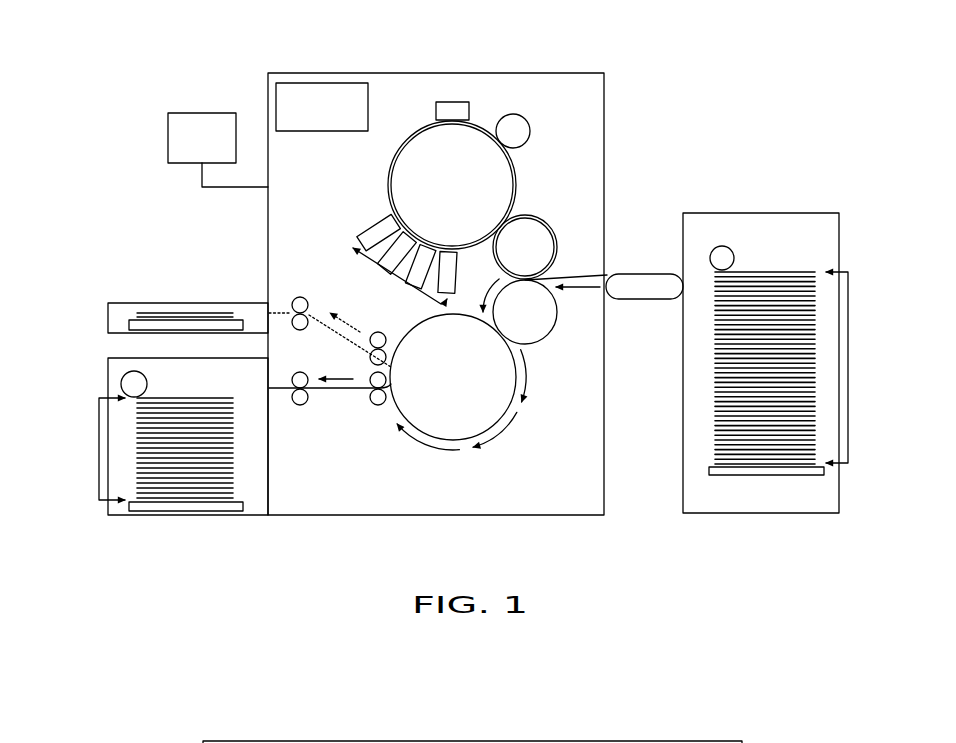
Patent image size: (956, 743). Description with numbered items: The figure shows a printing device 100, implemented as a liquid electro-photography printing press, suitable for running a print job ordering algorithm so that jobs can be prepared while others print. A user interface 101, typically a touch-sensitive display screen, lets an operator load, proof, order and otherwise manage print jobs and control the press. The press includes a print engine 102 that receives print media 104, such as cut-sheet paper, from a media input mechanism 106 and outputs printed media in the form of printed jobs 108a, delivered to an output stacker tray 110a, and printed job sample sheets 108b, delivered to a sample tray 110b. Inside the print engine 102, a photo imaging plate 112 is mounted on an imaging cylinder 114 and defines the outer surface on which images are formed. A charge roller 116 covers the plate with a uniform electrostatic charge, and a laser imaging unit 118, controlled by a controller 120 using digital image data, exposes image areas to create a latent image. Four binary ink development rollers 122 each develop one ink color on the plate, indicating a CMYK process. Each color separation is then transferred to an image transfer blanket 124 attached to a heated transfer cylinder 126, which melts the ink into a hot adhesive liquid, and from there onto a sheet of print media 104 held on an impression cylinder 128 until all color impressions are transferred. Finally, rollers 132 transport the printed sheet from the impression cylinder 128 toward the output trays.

The printing device 100 is at (196, 38).
The user interface 101 is at (218, 150).
The print engine 102 is at (537, 73).
The print media 104 is at (583, 277).
The media input mechanism 106 is at (790, 213).
The printed jobs 108a is at (99, 450).
The printed job sample sheets 108b is at (193, 317).
The output stacker tray 110a is at (108, 358).
The sample tray 110b is at (108, 303).
The photo imaging plate 112 is at (388, 177).
The imaging cylinder 114 is at (469, 197).
The charge roller 116 is at (528, 122).
The laser imaging unit 118 is at (467, 101).
The controller 120 is at (338, 120).
The binary ink development roller 122 is at (395, 282).
The image transfer blanket 124 is at (543, 222).
The transfer cylinder 126 is at (542, 259).
The impression cylinder 128 is at (543, 324).
The rollers 132 is at (469, 389).